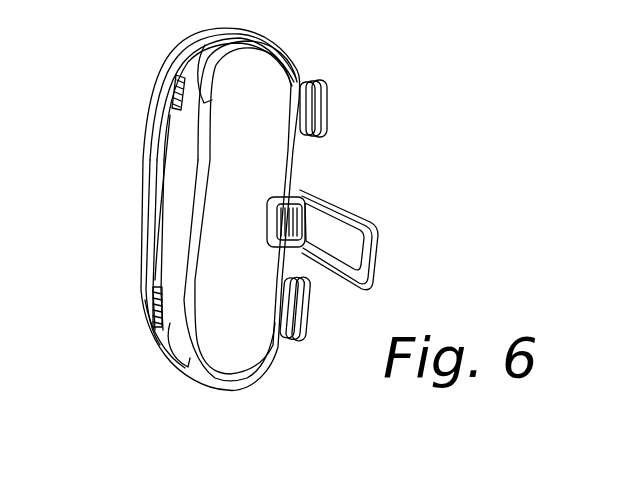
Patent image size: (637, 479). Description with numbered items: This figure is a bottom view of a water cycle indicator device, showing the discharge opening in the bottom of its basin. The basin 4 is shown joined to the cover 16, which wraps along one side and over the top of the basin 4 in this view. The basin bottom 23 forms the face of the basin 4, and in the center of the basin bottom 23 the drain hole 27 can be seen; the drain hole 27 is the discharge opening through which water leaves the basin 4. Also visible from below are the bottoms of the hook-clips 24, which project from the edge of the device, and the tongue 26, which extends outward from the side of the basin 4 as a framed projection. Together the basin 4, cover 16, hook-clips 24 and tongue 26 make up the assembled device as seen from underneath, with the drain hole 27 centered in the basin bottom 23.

The basin 4 is at (273, 80).
The cover 16 is at (180, 68).
The basin bottom 23 is at (291, 63).
The hook-clips 24 is at (327, 100).
The tongue 26 is at (378, 238).
The drain hole 27 is at (240, 217).